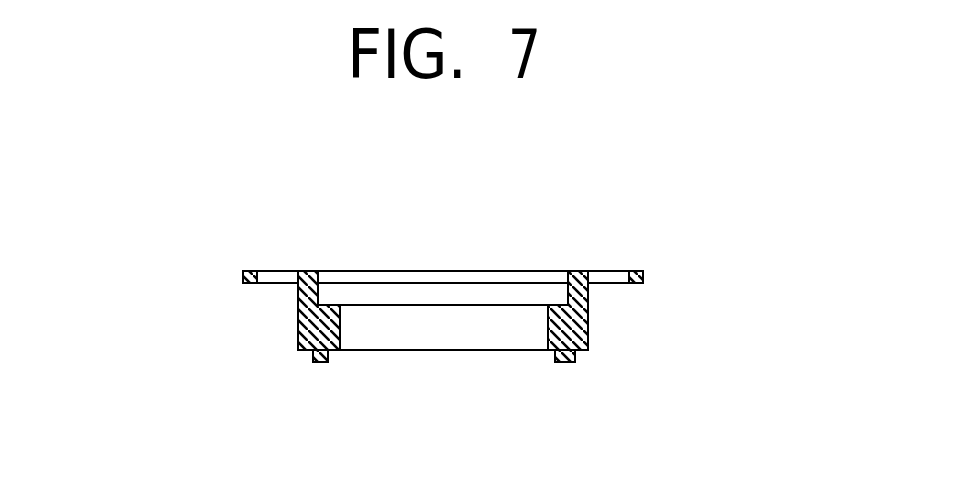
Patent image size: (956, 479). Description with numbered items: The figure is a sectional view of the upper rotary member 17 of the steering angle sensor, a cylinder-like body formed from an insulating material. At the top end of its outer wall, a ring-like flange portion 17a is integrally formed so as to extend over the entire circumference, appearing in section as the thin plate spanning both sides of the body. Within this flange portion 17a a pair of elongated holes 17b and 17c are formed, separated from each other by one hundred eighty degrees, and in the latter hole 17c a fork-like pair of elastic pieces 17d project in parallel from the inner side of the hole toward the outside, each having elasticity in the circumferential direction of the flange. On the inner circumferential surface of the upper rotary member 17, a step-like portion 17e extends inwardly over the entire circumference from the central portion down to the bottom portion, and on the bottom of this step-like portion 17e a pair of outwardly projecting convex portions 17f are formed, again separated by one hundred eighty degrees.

The upper rotary member 17 is at (447, 316).
The flange portion 17a is at (243, 282).
The elongated hole 17b is at (607, 279).
The elongated hole 17c is at (275, 285).
The elastic pieces 17d is at (274, 279).
The step-like portion 17e is at (325, 302).
The convex portions 17f is at (321, 362).